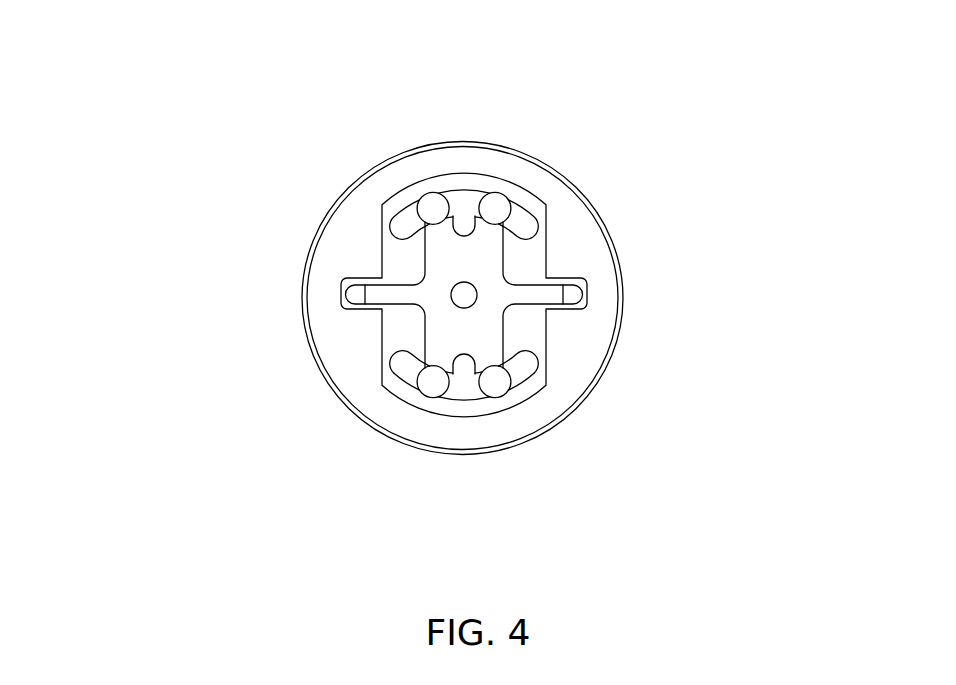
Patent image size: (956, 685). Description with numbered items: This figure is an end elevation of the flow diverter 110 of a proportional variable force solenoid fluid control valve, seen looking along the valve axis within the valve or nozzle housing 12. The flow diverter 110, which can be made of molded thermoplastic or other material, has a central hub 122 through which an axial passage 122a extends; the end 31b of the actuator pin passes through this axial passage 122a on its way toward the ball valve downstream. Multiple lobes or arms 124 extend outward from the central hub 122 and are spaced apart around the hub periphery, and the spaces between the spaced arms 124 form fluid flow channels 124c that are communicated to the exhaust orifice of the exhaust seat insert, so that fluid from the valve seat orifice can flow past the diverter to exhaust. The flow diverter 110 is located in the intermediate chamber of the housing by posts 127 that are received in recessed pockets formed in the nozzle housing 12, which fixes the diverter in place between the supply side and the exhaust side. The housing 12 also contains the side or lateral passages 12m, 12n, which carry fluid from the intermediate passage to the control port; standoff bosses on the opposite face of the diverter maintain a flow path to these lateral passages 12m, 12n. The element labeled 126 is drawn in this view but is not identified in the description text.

The valve or nozzle housing 12 is at (360, 258).
The side or lateral passage 12m is at (528, 223).
The side or lateral passage 12n is at (408, 372).
The end of actuator pin 31b is at (452, 301).
The flow diverter 110 is at (490, 283).
The central hub 122 is at (487, 318).
The axial passage 122a is at (451, 289).
The lobes or arms 124 is at (433, 208).
The fluid flow channels 124c is at (465, 220).
The wall portion 126 is at (487, 238).
The posts 127 is at (384, 294).